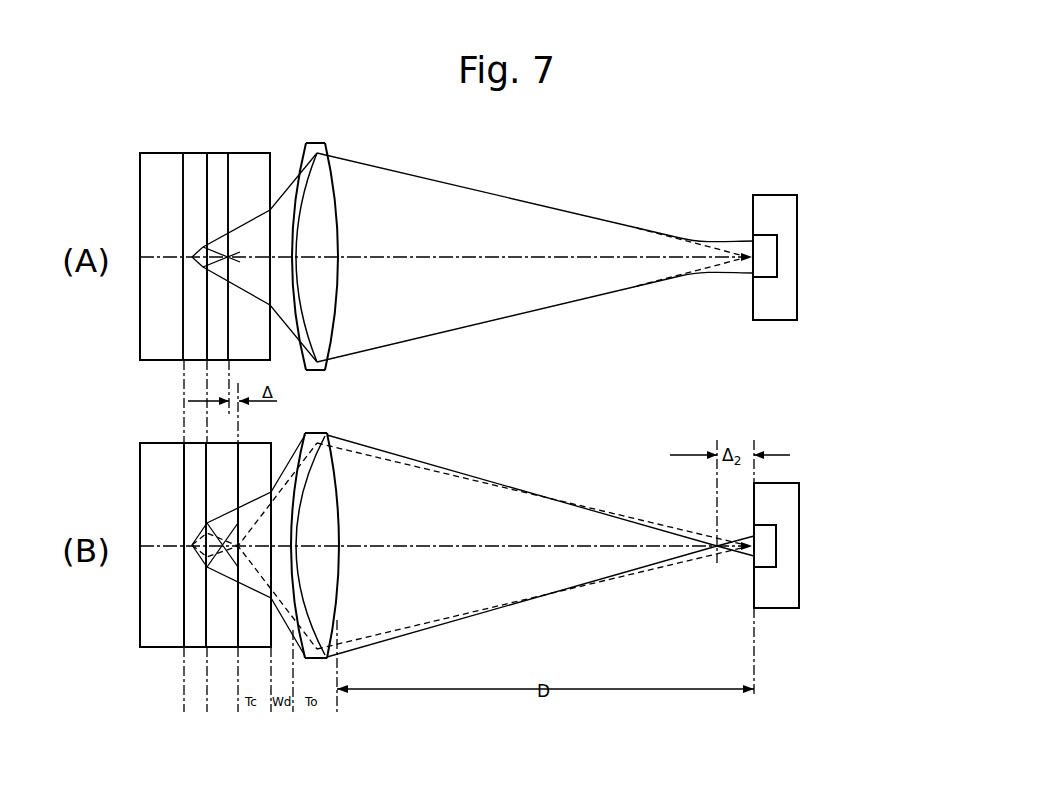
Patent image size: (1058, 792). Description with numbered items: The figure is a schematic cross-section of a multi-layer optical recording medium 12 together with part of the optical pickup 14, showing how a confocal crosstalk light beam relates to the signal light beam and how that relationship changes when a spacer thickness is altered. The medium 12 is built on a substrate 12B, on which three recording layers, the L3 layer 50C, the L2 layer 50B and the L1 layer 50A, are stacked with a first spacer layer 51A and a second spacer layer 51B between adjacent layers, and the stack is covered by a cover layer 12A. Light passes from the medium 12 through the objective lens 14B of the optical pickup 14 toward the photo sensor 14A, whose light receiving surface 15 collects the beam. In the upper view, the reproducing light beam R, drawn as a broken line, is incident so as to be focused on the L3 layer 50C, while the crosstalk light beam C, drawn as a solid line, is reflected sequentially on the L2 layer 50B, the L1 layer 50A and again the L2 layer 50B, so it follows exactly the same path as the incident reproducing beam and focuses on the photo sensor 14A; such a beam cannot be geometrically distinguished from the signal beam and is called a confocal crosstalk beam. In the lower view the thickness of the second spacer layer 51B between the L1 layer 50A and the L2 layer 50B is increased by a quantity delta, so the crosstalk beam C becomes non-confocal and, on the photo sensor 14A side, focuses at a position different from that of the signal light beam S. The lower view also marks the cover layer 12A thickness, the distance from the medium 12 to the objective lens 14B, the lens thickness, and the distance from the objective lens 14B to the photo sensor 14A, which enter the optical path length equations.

In FIG. 7A, the multi-layer optical recording medium 12 is at (235, 149).
In FIG. 7B, the multi-layer optical recording medium 12 is at (128, 601).
In FIG. 7B, the cover layer 12A is at (253, 456).
In FIG. 7B, the substrate 12B is at (157, 471).
In FIG. 7B, the optical pickup 14 is at (765, 558).
In FIG. 7A, the photo sensor 14A is at (763, 247).
In FIG. 7A, the objective lens 14B is at (323, 150).
In FIG. 7B, the objective lens 14B is at (318, 430).
In FIG. 7A, the light receiving surface 15 is at (753, 270).
In FIG. 7B, the light receiving surface 15 is at (754, 566).
In FIG. 7A, the L1 layer 50A is at (228, 330).
In FIG. 7B, the L1 layer 50A is at (234, 633).
In FIG. 7A, the L2 layer 50B is at (197, 330).
In FIG. 7B, the L2 layer 50B is at (205, 637).
In FIG. 7A, the L3 layer 50C is at (183, 307).
In FIG. 7B, the L3 layer 50C is at (182, 618).
In FIG. 7A, the first spacer layer 51A is at (190, 350).
In FIG. 7A, the second spacer layer 51B is at (215, 158).
In FIG. 7B, the second spacer layer 51B is at (219, 633).
In FIG. 7A, the reproducing light beam R is at (203, 247).
In FIG. 7A, the crosstalk light beam C is at (478, 190).
In FIG. 7B, the crosstalk light beam C is at (421, 463).
In FIG. 7B, the stray light beam S is at (428, 627).